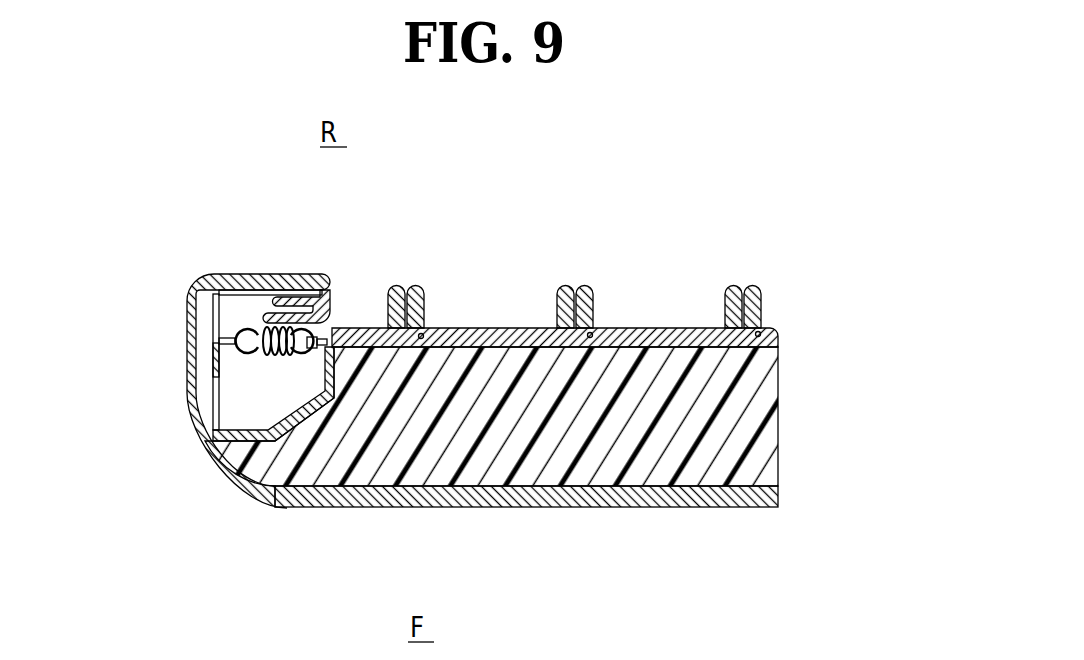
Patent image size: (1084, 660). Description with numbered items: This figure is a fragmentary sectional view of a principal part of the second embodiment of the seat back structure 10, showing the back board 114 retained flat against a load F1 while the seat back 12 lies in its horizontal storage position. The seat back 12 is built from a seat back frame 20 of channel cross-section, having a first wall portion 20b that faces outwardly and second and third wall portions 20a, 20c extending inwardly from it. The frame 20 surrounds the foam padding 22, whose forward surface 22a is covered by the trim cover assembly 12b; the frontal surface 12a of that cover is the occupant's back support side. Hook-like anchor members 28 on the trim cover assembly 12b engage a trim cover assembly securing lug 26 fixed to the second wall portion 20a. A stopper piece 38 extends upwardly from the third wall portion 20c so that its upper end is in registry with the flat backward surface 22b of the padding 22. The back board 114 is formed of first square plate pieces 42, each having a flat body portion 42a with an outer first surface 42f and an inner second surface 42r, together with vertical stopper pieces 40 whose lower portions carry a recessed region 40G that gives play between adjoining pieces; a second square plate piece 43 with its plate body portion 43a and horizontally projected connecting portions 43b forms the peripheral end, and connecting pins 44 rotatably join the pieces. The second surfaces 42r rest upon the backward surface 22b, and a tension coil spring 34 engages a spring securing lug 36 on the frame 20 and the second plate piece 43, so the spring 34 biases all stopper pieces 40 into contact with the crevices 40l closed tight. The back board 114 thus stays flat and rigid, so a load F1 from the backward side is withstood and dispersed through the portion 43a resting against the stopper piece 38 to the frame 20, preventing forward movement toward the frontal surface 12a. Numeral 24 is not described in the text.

The seat back structure 10 is at (640, 194).
The seat back 12 is at (686, 512).
The frontal surface of trim cover assembly 12a is at (648, 508).
The trim cover assembly 12b is at (779, 498).
The back board 114 is at (450, 199).
The seat back frame 20 is at (203, 320).
The second wall portion 20a is at (223, 275).
The first wall portion 20b is at (210, 384).
The third wall portion 20c is at (238, 468).
The foam padding 22 is at (768, 430).
The forward surface of foam padding 22a is at (744, 508).
The backward surface of foam padding 22b is at (472, 327).
The adhesive layer 24 is at (470, 508).
The trim cover assembly securing lug 26 is at (299, 297).
The hook-like anchor member 28 is at (249, 290).
The tension coil spring 34 is at (262, 358).
The spring securing lug 36 is at (222, 330).
The stopper piece 38 is at (338, 350).
The vertical stopper piece 40 is at (394, 290).
The crevice 40l is at (403, 290).
The recessed region 40G is at (420, 339).
The first square plate piece 42 is at (527, 218).
The flat body portion 42a is at (518, 327).
The first surface 42f is at (488, 327).
The second surface 42r is at (515, 347).
The second square plate piece 43 is at (358, 322).
The plate body portion 43a is at (333, 330).
The horizontally projected connecting portion 43b is at (310, 346).
The connecting pin 44 is at (425, 333).
The load F1 is at (745, 232).